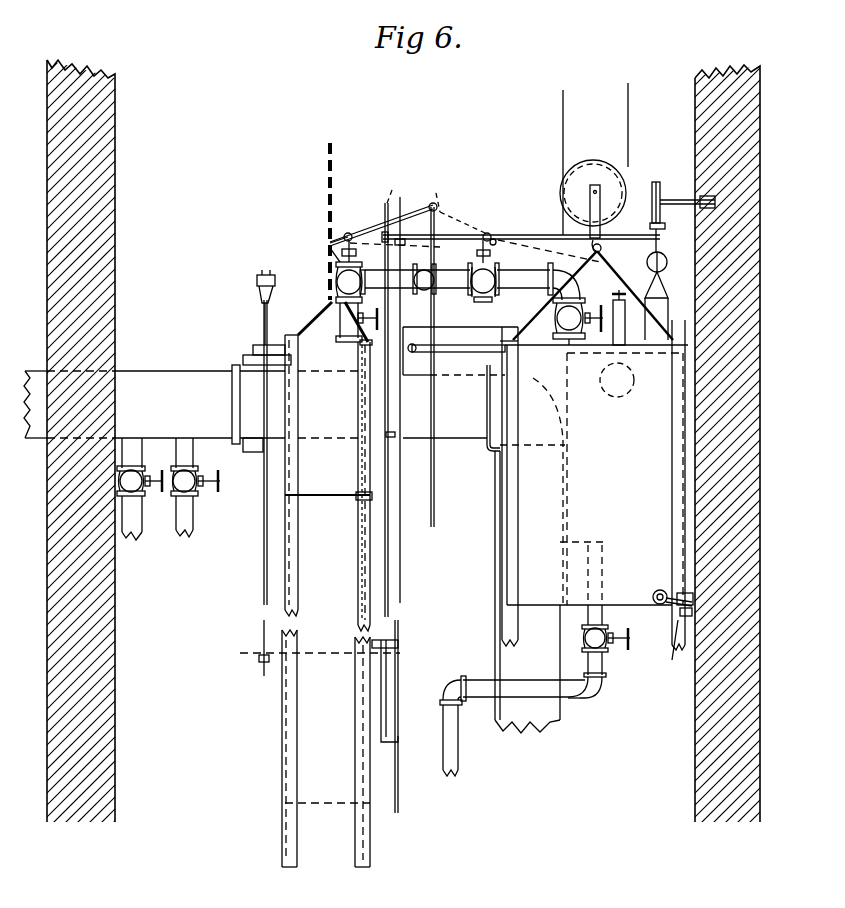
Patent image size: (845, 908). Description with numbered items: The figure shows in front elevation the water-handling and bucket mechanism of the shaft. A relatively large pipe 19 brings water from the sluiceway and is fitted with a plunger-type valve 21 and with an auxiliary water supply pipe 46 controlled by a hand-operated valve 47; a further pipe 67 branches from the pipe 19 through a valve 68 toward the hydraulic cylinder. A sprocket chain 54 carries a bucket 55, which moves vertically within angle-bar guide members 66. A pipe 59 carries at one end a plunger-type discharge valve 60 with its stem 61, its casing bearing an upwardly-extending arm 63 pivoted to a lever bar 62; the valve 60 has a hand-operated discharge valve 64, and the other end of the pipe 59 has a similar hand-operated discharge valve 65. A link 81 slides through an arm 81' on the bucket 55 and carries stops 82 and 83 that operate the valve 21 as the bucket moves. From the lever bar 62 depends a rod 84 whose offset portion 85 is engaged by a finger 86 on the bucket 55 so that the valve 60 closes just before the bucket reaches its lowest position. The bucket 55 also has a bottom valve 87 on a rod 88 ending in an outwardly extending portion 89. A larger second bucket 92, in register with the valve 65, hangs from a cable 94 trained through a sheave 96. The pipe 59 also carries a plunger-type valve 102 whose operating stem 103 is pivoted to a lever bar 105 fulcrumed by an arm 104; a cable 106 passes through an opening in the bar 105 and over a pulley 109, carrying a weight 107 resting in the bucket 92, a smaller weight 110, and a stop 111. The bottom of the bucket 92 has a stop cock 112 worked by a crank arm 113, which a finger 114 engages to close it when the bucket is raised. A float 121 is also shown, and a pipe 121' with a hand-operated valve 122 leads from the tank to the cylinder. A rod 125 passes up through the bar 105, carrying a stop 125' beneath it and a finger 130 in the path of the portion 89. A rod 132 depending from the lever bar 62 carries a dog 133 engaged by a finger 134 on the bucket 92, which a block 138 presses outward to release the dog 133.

The pipe 19 is at (140, 385).
The valve 21 is at (250, 357).
The auxiliary water supply pipe 46 is at (135, 522).
The hand-operated valve 47 is at (131, 480).
The sprocket chain 54 is at (337, 180).
The bucket 55 is at (327, 466).
The pipe 59 is at (460, 289).
The discharge valve 60 is at (336, 284).
The valve stem 61 is at (357, 252).
The lever bar 62 is at (360, 232).
The arm 63 is at (328, 246).
The hand-operated discharge valve 64 is at (338, 320).
The hand-operated discharge valve 65 is at (580, 317).
The guide members 66 is at (358, 762).
The pipe 67 is at (192, 457).
The valve 68 is at (192, 486).
The link 81 is at (244, 452).
The arm 81' is at (282, 318).
The stop 82 is at (258, 662).
The stop 83 is at (261, 345).
The rod 84 is at (390, 528).
The offset portion 85 is at (390, 744).
The finger 86 is at (395, 436).
The valve 87 is at (360, 500).
The rod 88 is at (358, 400).
The outwardly extending portion 89 is at (362, 345).
The second bucket 92 is at (658, 586).
The cable 94 is at (630, 100).
The sheave 96 is at (612, 182).
The valve 102 is at (488, 288).
The operating stem 103 is at (488, 233).
The arm 104 is at (503, 256).
The lever bar 105 is at (523, 240).
The cable 106 is at (603, 251).
The weight 107 is at (668, 310).
The pulley 109 is at (657, 182).
The weight 110 is at (666, 260).
The stop 111 is at (668, 224).
The stop cock 112 is at (662, 612).
The crank arm 113 is at (678, 645).
The finger 114 is at (688, 595).
The float 121 is at (594, 485).
The pipe 121' is at (478, 729).
The hand-operated valve 122 is at (600, 650).
The rod 125 is at (417, 716).
The stop 125' is at (435, 196).
The finger 130 is at (400, 648).
The rod 132 is at (435, 394).
The dog 133 is at (428, 350).
The finger 134 is at (470, 351).
The block 138 is at (447, 340).